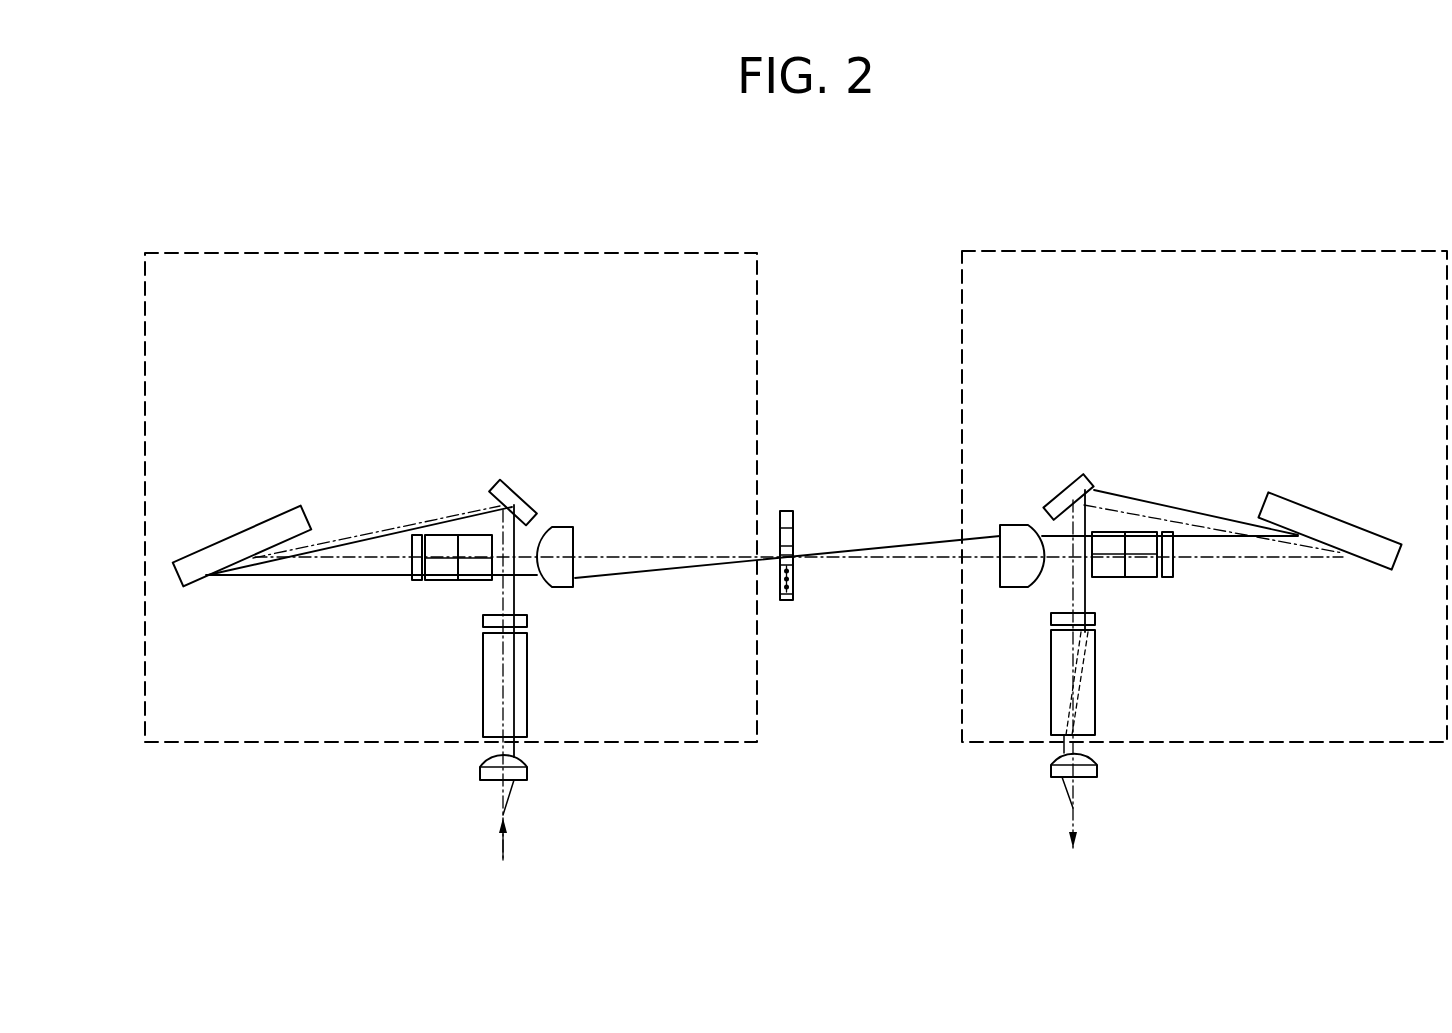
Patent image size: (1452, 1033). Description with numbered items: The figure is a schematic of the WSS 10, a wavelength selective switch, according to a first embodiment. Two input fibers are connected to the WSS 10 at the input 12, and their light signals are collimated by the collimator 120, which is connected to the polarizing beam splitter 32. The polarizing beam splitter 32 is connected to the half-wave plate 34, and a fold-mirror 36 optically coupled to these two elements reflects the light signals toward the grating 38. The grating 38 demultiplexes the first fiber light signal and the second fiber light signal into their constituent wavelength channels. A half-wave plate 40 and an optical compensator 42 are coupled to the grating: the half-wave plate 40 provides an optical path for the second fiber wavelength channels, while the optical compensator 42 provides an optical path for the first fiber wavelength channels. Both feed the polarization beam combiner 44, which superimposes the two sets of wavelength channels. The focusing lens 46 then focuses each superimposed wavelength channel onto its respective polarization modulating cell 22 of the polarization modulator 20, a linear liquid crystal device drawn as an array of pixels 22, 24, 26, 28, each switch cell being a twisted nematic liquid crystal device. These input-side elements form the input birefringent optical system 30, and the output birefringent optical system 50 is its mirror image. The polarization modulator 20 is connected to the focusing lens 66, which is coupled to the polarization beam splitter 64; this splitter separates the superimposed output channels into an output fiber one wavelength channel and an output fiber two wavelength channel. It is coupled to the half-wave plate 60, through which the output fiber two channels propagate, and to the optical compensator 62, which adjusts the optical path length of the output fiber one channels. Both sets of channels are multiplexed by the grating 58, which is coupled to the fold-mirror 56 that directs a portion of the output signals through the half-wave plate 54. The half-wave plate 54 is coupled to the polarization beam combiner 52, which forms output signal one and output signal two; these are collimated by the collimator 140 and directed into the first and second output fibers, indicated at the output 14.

The WSS 10 is at (862, 165).
The input 12 is at (506, 812).
The output fibers 14 is at (1073, 808).
The polarization modulator 20 is at (788, 510).
The polarization modulating cell 22 is at (786, 522).
The pixel 24 is at (786, 538).
The pixel 26 is at (792, 564).
The pixel 28 is at (793, 595).
The input birefringent optical system 30 is at (692, 253).
The polarizing beam splitter 32 is at (485, 703).
The half-wave plate 34 is at (528, 620).
The fold-mirror 36 is at (525, 505).
The grating 38 is at (285, 520).
The half-wave plate 40 is at (418, 535).
The optical compensator 42 is at (442, 540).
The polarization beam combiner 44 is at (482, 540).
The focusing lens 46 is at (565, 545).
The output birefringent optical system 50 is at (1218, 251).
The polarization beam combiner 52 is at (1090, 700).
The half-wave plate 54 is at (1097, 611).
The fold-mirror 56 is at (1085, 486).
The grating 58 is at (1287, 504).
The half-wave plate 60 is at (1171, 567).
The optical compensator 62 is at (1149, 530).
The polarization beam splitter 64 is at (1113, 530).
The focusing lens 66 is at (1015, 525).
The collimator 120 is at (522, 771).
The collimator 140 is at (1052, 768).